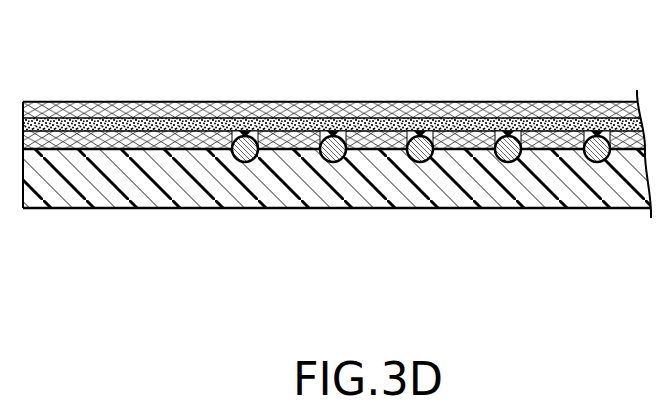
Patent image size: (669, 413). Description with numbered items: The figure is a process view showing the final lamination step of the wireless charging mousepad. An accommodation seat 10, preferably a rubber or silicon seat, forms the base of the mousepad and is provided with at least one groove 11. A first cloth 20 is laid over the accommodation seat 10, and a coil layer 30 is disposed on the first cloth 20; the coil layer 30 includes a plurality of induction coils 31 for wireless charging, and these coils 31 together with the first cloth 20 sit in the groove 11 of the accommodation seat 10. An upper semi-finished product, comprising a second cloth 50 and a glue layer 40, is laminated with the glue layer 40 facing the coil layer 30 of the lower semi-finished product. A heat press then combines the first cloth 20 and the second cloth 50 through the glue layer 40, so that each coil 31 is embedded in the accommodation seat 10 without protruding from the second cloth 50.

The accommodation seat 10 is at (317, 193).
The groove 11 is at (499, 163).
The first cloth 20 is at (183, 145).
The coil layer 30 is at (519, 133).
The induction coil 31 is at (514, 130).
The glue layer 40 is at (386, 123).
The second cloth 50 is at (292, 108).